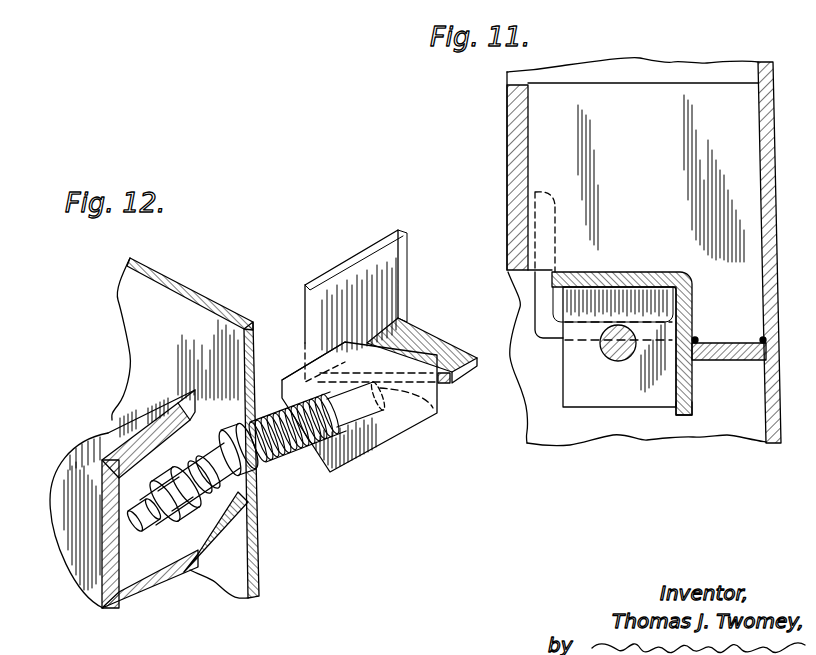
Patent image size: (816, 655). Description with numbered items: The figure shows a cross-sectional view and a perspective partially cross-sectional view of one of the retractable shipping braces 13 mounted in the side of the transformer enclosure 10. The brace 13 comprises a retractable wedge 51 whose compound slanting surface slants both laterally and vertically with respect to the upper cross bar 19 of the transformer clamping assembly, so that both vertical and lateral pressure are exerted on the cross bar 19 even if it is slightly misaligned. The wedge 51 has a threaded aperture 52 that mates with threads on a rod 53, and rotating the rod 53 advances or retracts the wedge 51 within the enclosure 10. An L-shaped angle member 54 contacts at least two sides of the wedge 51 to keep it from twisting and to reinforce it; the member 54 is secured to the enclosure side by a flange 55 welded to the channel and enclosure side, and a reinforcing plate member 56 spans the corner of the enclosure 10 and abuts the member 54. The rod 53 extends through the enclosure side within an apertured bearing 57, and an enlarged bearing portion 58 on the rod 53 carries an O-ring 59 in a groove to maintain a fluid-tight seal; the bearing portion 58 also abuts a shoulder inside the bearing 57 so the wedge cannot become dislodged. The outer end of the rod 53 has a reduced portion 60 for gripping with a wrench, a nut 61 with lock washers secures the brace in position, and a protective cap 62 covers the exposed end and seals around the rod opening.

In FIG. 11, the enclosure 10 is at (778, 85).
In FIG. 12, the enclosure 10 is at (197, 310).
In FIG. 12, the retractable brace 13 is at (83, 446).
In FIG. 11, the upper cross bar 19 is at (535, 320).
In FIG. 12, the upper cross bar 19 is at (420, 333).
In FIG. 11, the retractable wedge 51 is at (593, 393).
In FIG. 12, the retractable wedge 51 is at (387, 430).
In FIG. 12, the threaded aperture 52 is at (437, 408).
In FIG. 11, the rod 53 is at (604, 352).
In FIG. 12, the rod 53 is at (287, 458).
In FIG. 11, the L-shaped angle member 54 is at (692, 403).
In FIG. 11, the flange 55 is at (717, 343).
In FIG. 11, the reinforcing plate member 56 is at (652, 194).
In FIG. 12, the apertured bearing 57 is at (222, 575).
In FIG. 12, the enlarged bearing portion 58 is at (258, 495).
In FIG. 12, the O-ring 59 is at (268, 410).
In FIG. 12, the reduced portion 60 is at (135, 521).
In FIG. 12, the nut 61 is at (118, 428).
In FIG. 12, the protective cap 62 is at (66, 535).